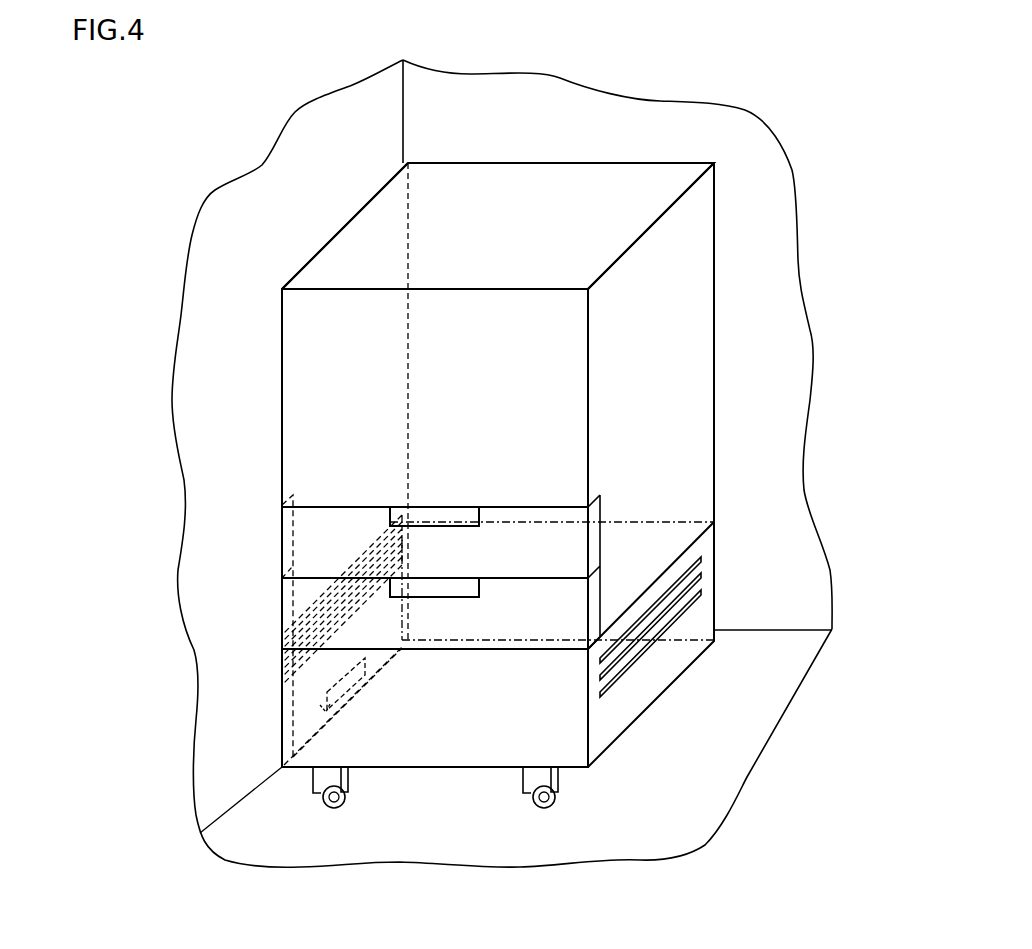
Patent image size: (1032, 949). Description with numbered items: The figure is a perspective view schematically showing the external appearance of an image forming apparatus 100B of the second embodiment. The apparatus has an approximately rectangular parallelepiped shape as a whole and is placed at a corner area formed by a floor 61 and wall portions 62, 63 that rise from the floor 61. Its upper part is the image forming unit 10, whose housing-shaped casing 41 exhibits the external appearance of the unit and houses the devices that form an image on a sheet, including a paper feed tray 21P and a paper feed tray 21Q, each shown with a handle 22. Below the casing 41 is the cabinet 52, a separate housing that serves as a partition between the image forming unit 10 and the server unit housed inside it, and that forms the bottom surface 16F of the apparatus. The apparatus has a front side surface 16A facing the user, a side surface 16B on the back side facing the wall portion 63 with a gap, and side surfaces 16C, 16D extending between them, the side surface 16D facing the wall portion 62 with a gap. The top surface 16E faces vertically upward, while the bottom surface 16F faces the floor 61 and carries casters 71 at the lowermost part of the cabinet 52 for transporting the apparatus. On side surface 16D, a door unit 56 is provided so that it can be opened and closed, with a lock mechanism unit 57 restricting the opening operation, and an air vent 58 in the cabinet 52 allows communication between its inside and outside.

The image forming apparatus 100B is at (482, 475).
The image forming unit 10 is at (482, 475).
The top surface 16E is at (591, 180).
The wall portion 63 is at (763, 207).
The side surface 16B is at (680, 293).
The casing 41 is at (698, 340).
The side surface 16C is at (680, 390).
The side surface 16D is at (318, 358).
The side surface 16A is at (318, 418).
The wall portion 62 is at (221, 453).
The paper feed tray 21P is at (268, 534).
The paper feed tray 21Q is at (268, 606).
The tray handle 22 is at (302, 543).
The air vent 58 is at (283, 688).
The lock mechanism unit 57 is at (318, 708).
The door unit 56 is at (320, 717).
The floor 61 is at (262, 840).
The caster 71 is at (312, 772).
The bottom surface 16F is at (393, 742).
The cabinet 52 is at (640, 692).